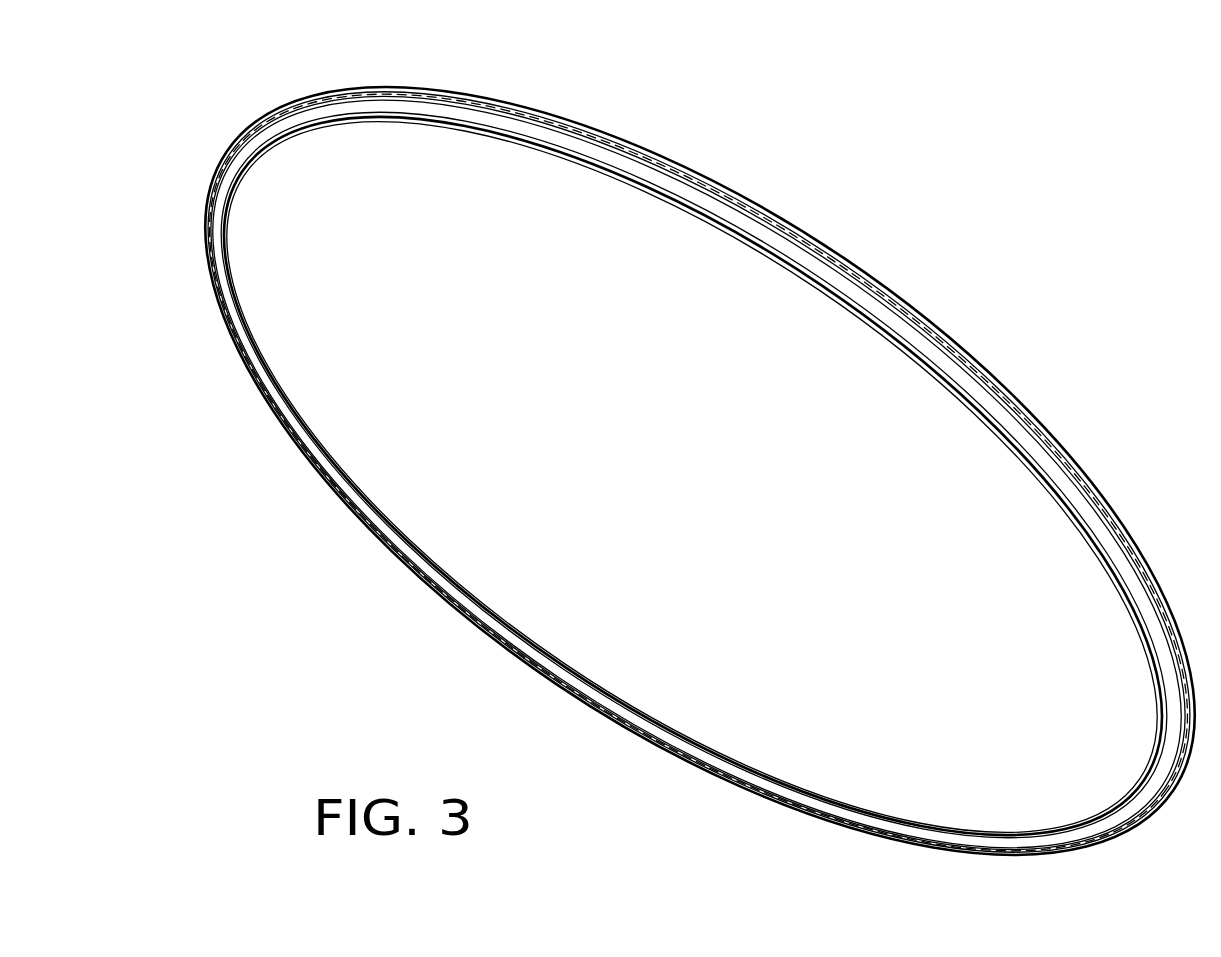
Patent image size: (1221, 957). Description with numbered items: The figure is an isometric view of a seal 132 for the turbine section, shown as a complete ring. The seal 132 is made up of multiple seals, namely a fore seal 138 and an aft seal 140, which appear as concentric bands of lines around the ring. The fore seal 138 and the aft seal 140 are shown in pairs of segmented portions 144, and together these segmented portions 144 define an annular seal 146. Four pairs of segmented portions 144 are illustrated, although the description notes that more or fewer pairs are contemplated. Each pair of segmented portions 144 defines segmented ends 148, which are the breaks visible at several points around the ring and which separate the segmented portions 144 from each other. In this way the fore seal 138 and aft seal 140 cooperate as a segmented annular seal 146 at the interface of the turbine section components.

The seal 132 is at (652, 478).
The fore seal 138 is at (362, 522).
The aft seal 140 is at (398, 525).
The segmented portions 144 is at (520, 140).
The annular seal 146 is at (1055, 121).
The segmented ends 148 is at (218, 243).